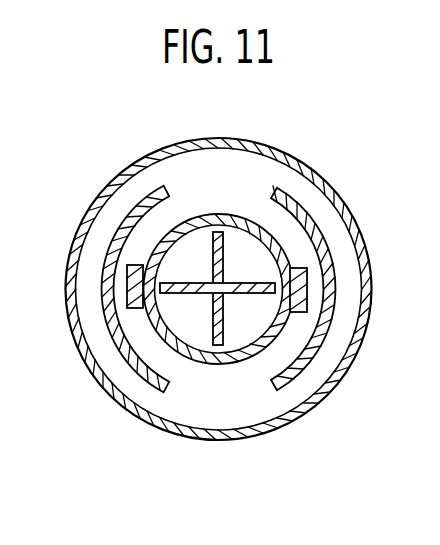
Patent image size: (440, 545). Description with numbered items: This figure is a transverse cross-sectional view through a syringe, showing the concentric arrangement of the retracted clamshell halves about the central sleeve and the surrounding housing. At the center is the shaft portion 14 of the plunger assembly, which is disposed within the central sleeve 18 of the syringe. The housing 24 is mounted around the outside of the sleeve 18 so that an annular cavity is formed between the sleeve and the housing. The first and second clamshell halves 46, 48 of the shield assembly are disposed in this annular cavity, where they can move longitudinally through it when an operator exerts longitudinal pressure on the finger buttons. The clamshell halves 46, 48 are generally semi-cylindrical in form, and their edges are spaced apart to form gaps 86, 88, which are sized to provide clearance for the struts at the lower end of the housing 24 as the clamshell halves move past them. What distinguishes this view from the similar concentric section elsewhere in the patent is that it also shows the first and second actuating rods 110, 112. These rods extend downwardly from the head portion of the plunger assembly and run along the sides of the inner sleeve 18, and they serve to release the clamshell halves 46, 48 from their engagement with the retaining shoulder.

The shaft portion 14 is at (212, 246).
The sleeve 18 is at (243, 215).
The housing 24 is at (110, 183).
The first clamshell half 46 is at (113, 247).
The second clamshell half 48 is at (290, 205).
The gap 86 is at (222, 188).
The gap 88 is at (202, 400).
The first actuating rod 110 is at (128, 290).
The second actuating rod 112 is at (303, 298).